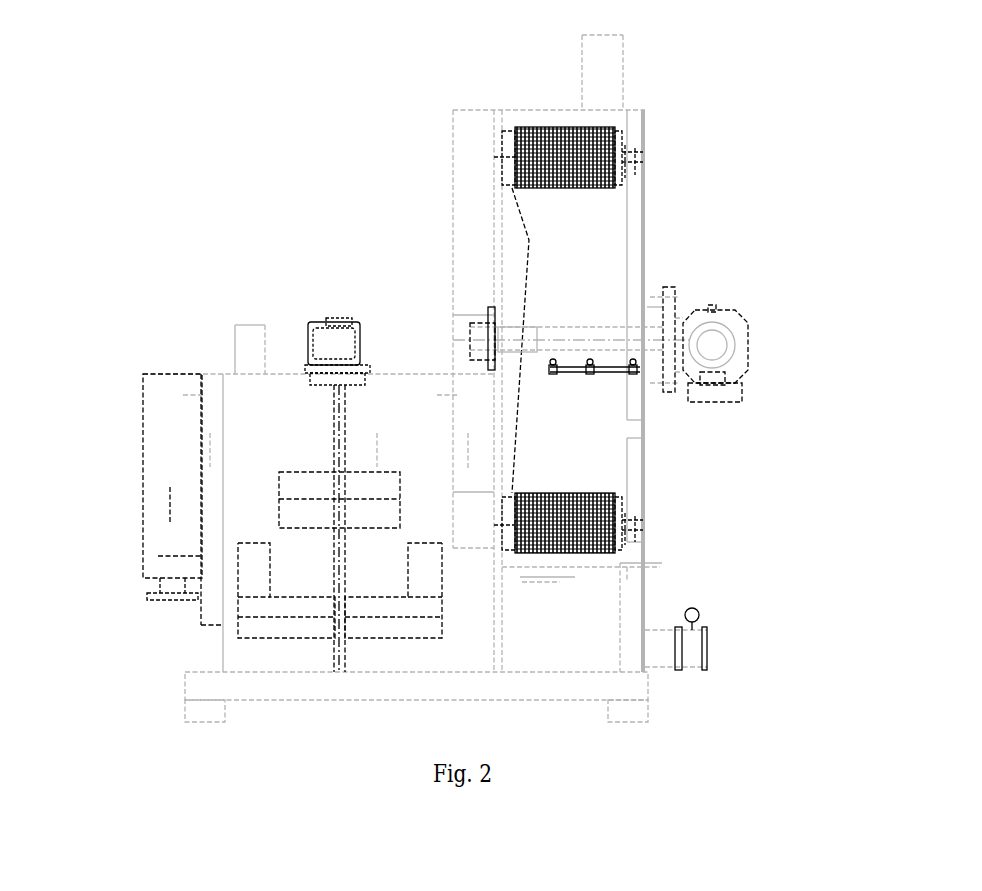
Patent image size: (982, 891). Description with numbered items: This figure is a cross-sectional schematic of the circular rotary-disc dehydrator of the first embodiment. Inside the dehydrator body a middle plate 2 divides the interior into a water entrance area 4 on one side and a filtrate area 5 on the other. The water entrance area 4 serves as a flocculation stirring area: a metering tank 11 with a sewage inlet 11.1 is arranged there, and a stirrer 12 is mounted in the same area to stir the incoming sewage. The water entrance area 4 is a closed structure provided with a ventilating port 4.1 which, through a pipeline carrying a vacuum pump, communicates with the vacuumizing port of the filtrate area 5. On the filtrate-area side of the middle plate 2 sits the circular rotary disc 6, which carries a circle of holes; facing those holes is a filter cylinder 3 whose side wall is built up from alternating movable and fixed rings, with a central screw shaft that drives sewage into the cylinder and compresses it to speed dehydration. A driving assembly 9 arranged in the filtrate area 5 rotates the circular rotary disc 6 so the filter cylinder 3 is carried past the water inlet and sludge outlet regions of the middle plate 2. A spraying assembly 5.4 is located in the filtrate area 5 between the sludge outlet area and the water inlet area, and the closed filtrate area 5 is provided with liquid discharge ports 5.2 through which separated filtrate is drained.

The middle plate 2 is at (494, 445).
The filter cylinder 3 is at (608, 128).
The water entrance area 4 is at (268, 414).
The ventilating port 4.1 is at (250, 343).
The filtrate area 5 is at (582, 418).
The liquid discharge port 5.2 is at (660, 647).
The spraying assembly 5.4 is at (620, 370).
The circular rotary disc 6 is at (528, 220).
The driving assembly 9 is at (712, 346).
The metering tank 11 is at (163, 437).
The sewage inlet 11.1 is at (170, 587).
The stirrer 12 is at (308, 497).